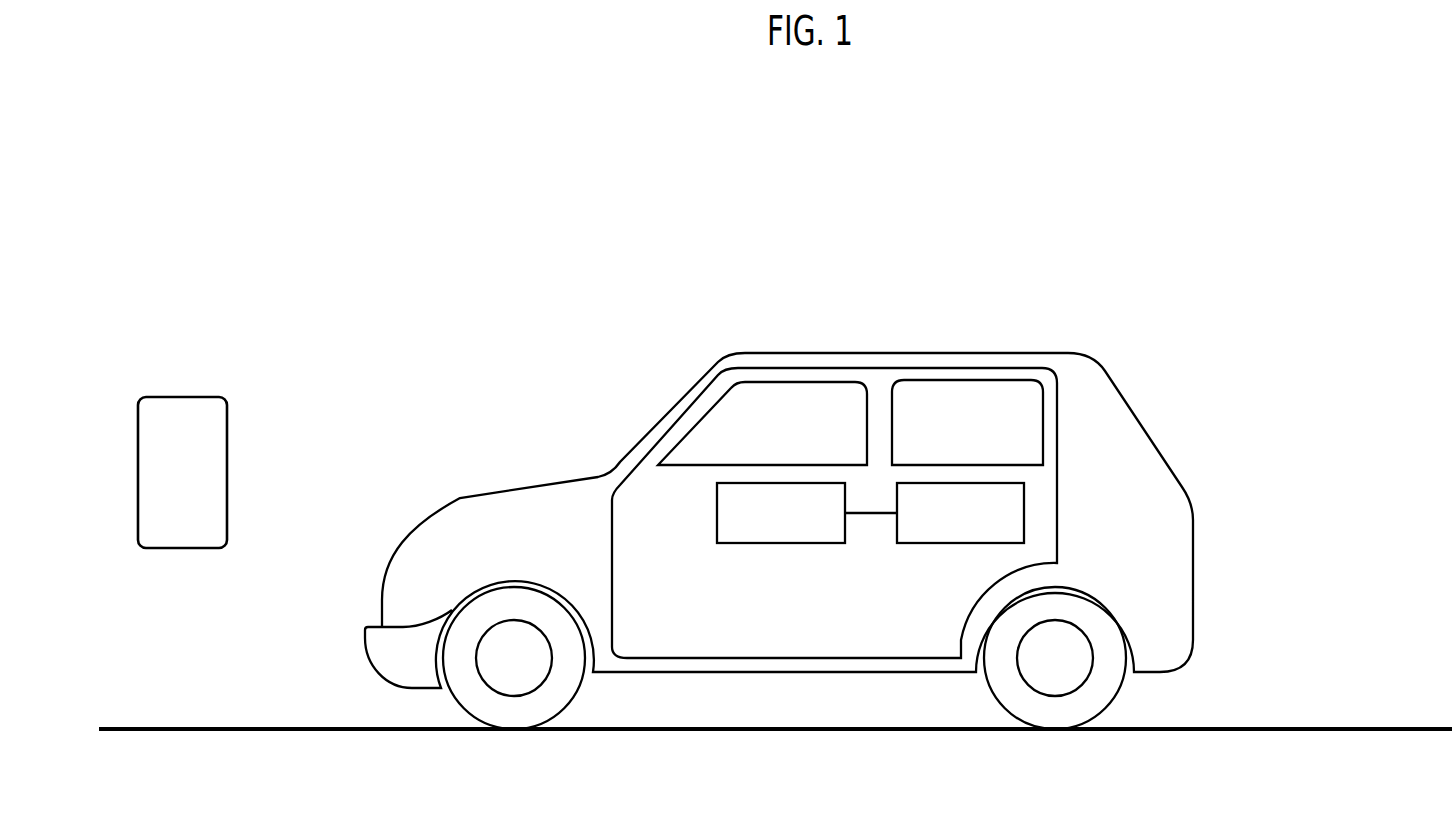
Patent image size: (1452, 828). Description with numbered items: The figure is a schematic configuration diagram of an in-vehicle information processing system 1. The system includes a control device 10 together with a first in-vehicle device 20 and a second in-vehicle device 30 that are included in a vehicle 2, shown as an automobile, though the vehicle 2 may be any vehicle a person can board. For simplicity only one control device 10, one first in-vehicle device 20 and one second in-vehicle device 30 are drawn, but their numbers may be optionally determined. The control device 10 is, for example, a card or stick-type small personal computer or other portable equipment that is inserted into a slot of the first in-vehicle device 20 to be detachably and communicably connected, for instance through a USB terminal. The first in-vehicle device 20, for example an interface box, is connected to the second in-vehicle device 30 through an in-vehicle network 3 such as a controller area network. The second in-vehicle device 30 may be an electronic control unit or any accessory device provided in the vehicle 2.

The in-vehicle information processing system 1 is at (543, 223).
The control device 10 is at (182, 402).
The vehicle 2 is at (907, 360).
The first in-vehicle device 20 is at (765, 533).
The in-vehicle network 3 is at (868, 513).
The second in-vehicle device 30 is at (940, 533).